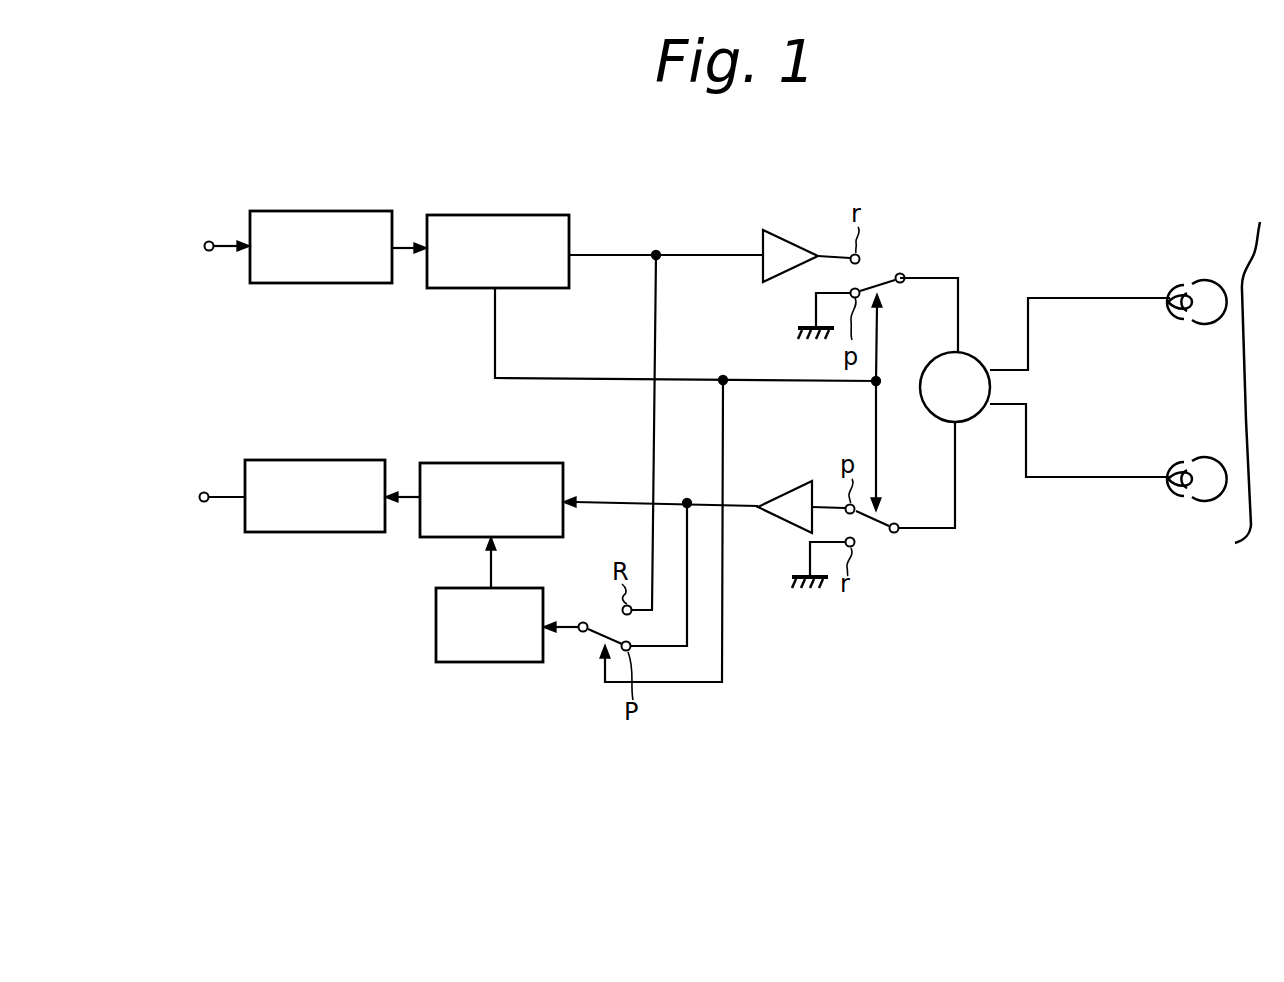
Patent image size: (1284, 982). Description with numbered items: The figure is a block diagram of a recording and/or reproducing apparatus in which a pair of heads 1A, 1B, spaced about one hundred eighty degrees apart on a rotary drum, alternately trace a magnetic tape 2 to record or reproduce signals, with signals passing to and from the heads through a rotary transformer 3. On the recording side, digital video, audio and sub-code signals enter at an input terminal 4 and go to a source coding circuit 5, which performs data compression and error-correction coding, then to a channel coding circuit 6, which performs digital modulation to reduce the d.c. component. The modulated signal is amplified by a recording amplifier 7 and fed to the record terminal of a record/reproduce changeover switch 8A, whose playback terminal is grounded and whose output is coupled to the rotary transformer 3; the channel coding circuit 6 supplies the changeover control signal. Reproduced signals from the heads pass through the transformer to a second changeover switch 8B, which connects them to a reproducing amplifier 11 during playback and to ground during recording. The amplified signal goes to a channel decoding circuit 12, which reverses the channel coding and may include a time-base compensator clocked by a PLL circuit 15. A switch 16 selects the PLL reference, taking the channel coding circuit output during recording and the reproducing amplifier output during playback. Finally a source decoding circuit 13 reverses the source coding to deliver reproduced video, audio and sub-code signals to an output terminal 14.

The head 1A is at (1208, 283).
The head 1B is at (1203, 503).
The magnetic tape 2 is at (1250, 365).
The rotary transformer 3 is at (975, 419).
The input terminal 4 is at (204, 246).
The source coding circuit 5 is at (326, 211).
The channel coding circuit 6 is at (500, 215).
The recording amplifier 7 is at (791, 242).
The record/reproduce changeover switch 8A is at (878, 271).
The record/reproduce changeover switch 8B is at (870, 533).
The reproducing amplifier 11 is at (782, 494).
The channel decoding circuit 12 is at (500, 463).
The source decoding circuit 13 is at (314, 460).
The output terminal 14 is at (199, 497).
The PLL circuit 15 is at (436, 622).
The switch 16 is at (598, 640).